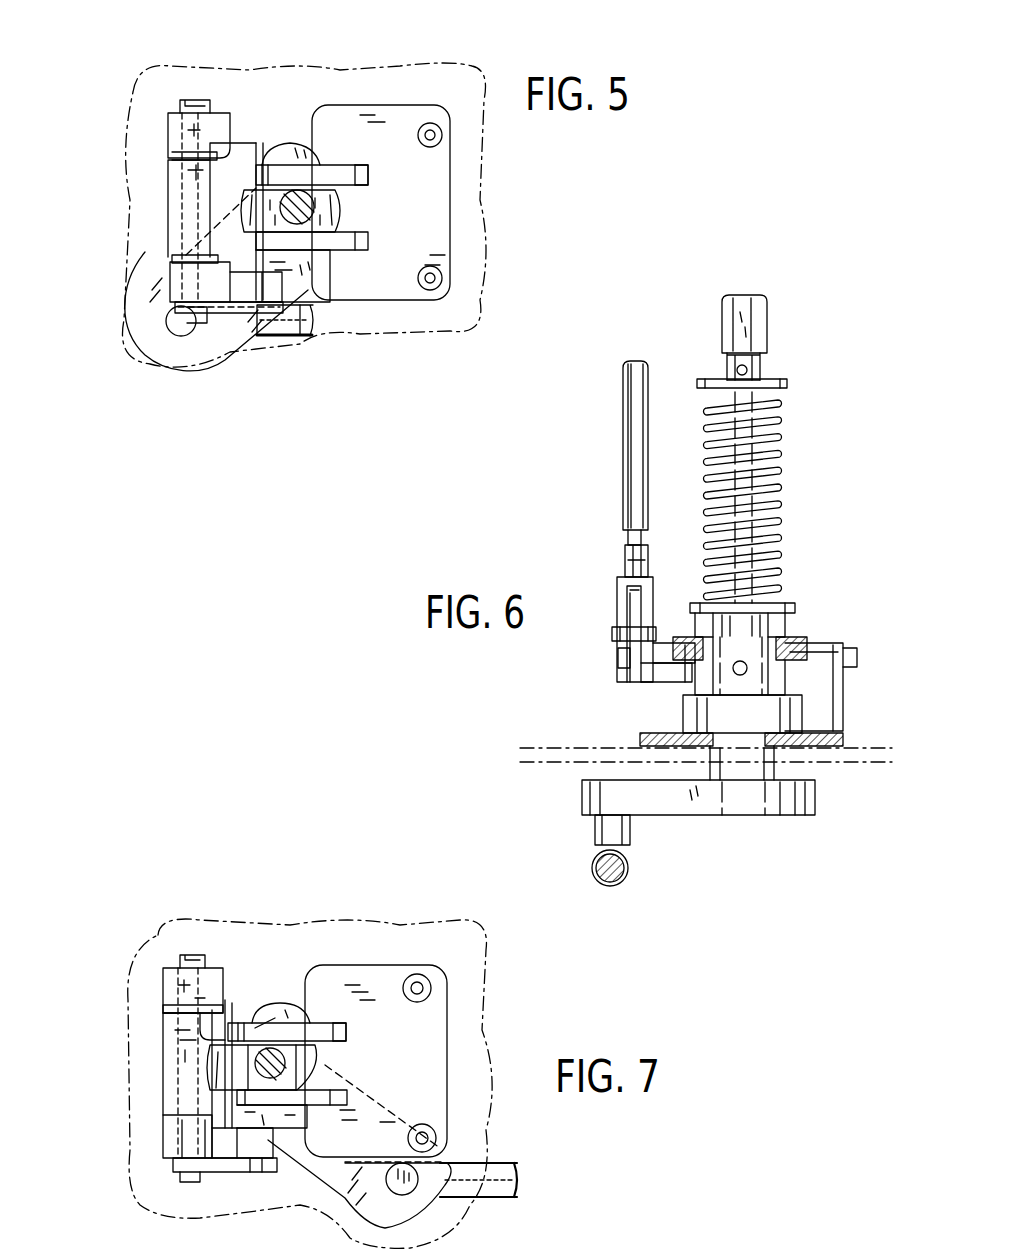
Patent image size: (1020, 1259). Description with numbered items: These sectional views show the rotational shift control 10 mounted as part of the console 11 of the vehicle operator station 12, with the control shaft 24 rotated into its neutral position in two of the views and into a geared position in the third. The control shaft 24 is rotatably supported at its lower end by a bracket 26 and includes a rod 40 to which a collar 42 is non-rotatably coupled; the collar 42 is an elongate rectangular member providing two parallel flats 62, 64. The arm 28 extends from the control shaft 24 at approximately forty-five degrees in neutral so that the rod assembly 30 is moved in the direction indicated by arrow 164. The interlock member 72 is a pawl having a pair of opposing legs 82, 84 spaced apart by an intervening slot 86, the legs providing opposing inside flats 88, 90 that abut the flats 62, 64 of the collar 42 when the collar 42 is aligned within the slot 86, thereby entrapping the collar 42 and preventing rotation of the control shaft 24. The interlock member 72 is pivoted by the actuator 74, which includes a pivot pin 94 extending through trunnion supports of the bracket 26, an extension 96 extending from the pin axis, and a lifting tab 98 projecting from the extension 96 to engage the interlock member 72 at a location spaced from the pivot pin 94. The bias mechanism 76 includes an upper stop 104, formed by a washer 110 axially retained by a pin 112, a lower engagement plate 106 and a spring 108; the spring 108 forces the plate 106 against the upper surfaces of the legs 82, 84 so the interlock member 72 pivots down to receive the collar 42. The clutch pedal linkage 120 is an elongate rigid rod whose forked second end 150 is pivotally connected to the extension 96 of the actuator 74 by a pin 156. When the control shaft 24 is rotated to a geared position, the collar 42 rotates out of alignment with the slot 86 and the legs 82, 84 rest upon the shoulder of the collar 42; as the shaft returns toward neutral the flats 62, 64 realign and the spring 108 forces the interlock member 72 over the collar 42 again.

In FIG. 5, the rotational shift control 10 is at (214, 40).
In FIG. 6, the rotational shift control 10 is at (630, 340).
In FIG. 7, the rotational shift control 10 is at (108, 916).
In FIG. 5, the console 11 is at (476, 68).
In FIG. 6, the console 11 is at (866, 764).
In FIG. 7, the console 11 is at (478, 938).
In FIG. 5, the vehicle operator station 12 is at (490, 330).
In FIG. 6, the vehicle operator station 12 is at (840, 768).
In FIG. 7, the vehicle operator station 12 is at (405, 945).
In FIG. 5, the control shaft 24 is at (345, 200).
In FIG. 7, the bracket 26 is at (450, 1062).
In FIG. 5, the arm 28 is at (158, 262).
In FIG. 6, the arm 28 is at (690, 814).
In FIG. 7, the arm 28 is at (447, 1158).
In FIG. 5, the rod assembly 30 is at (290, 340).
In FIG. 6, the rod assembly 30 is at (600, 882).
In FIG. 7, the rod assembly 30 is at (496, 1162).
In FIG. 5, the rod 40 is at (308, 216).
In FIG. 6, the rod 40 is at (764, 306).
In FIG. 5, the collar 42 is at (340, 205).
In FIG. 6, the collar 42 is at (762, 678).
In FIG. 7, the collar 42 is at (224, 1030).
In FIG. 5, the flat 62 is at (330, 236).
In FIG. 7, the flat 62 is at (288, 1072).
In FIG. 5, the flat 64 is at (300, 178).
In FIG. 7, the flat 64 is at (215, 1070).
In FIG. 6, the interlock member 72 is at (802, 640).
In FIG. 7, the interlock member 72 is at (170, 968).
In FIG. 5, the actuator 74 is at (235, 320).
In FIG. 6, the actuator 74 is at (614, 652).
In FIG. 7, the actuator 74 is at (225, 1175).
In FIG. 6, the bias mechanism 76 is at (778, 428).
In FIG. 5, the leg 82 is at (352, 242).
In FIG. 7, the leg 82 is at (325, 1128).
In FIG. 5, the leg 84 is at (370, 178).
In FIG. 7, the leg 84 is at (338, 1030).
In FIG. 5, the slot 86 is at (352, 180).
In FIG. 7, the slot 86 is at (332, 1025).
In FIG. 5, the inside flat 88 is at (345, 226).
In FIG. 7, the inside flat 88 is at (325, 1100).
In FIG. 5, the inside flat 90 is at (350, 172).
In FIG. 7, the inside flat 90 is at (342, 1042).
In FIG. 5, the pivot pin 94 is at (168, 198).
In FIG. 6, the pivot pin 94 is at (857, 658).
In FIG. 7, the pivot pin 94 is at (188, 1184).
In FIG. 6, the extension 96 is at (632, 688).
In FIG. 7, the extension 96 is at (246, 1174).
In FIG. 5, the lifting tab 98 is at (275, 298).
In FIG. 6, the lifting tab 98 is at (665, 690).
In FIG. 7, the lifting tab 98 is at (272, 1143).
In FIG. 6, the upper stop 104 is at (790, 380).
In FIG. 6, the lower engagement plate 106 is at (800, 592).
In FIG. 6, the spring 108 is at (779, 482).
In FIG. 6, the washer 110 is at (700, 382).
In FIG. 6, the pin 112 is at (747, 376).
In FIG. 6, the linkage 120 is at (623, 452).
In FIG. 6, the second end 150 is at (612, 582).
In FIG. 6, the pin 156 is at (617, 630).
In FIG. 5, the arrow 164 is at (95, 318).